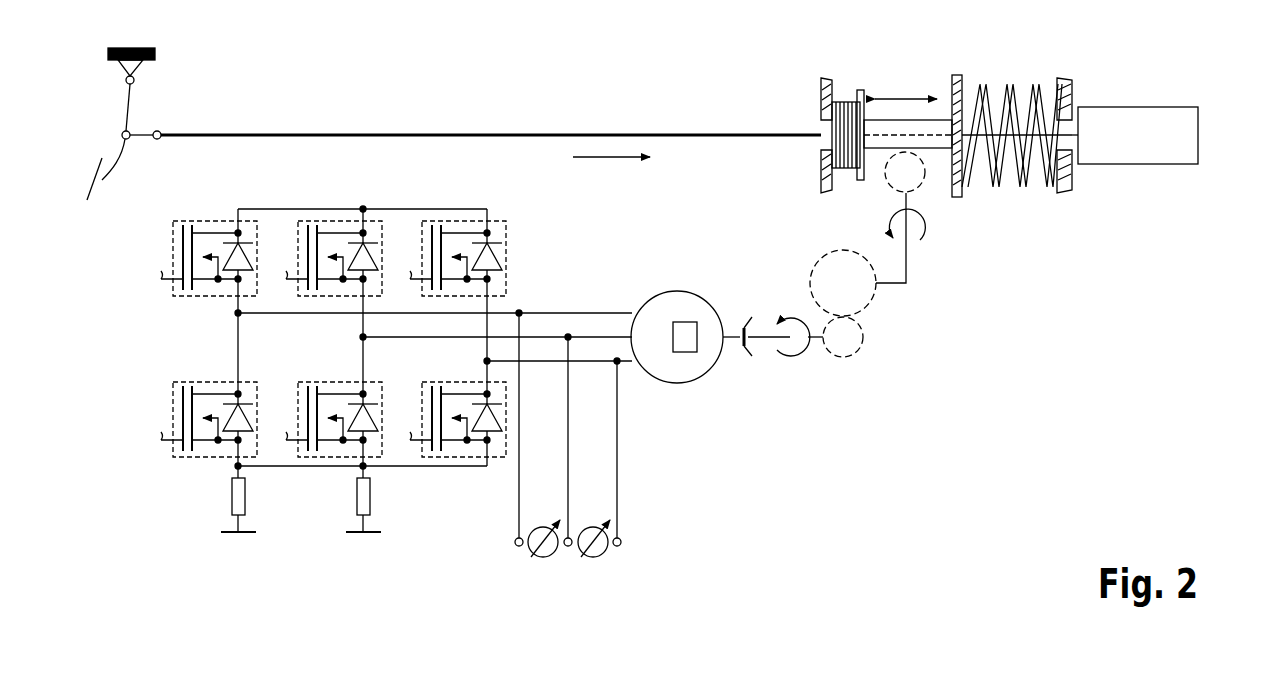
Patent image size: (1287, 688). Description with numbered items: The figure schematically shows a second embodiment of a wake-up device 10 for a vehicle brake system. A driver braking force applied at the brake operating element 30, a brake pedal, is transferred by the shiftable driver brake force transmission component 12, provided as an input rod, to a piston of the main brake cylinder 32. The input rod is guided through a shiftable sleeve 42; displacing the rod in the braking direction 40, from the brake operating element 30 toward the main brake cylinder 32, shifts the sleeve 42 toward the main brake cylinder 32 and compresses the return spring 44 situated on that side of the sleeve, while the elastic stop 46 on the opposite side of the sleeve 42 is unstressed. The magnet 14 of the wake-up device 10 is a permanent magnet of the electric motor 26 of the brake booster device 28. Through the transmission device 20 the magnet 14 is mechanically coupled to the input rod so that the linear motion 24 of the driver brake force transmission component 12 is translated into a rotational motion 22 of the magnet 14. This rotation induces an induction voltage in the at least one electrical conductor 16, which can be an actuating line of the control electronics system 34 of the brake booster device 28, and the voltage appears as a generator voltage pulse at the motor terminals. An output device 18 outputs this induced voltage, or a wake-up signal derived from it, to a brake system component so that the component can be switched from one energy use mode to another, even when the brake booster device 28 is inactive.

The wake-up device 10 is at (660, 437).
The driver brake force transmission component 12 is at (607, 133).
The magnet 14 is at (686, 322).
The electrical conductor 16 is at (604, 358).
The output device 18 is at (534, 556).
The transmission device 20 is at (908, 265).
The rotational motion 22 is at (805, 348).
The linear motion 24 is at (905, 97).
The electric motor 26 is at (704, 333).
The brake booster device 28 is at (374, 373).
The brake operating element 30 is at (128, 105).
The main brake cylinder 32 is at (1198, 136).
The control electronics system 34 is at (306, 503).
The braking direction 40 is at (607, 160).
The sleeve 42 is at (865, 90).
The return spring 44 is at (995, 186).
The elastic stop 46 is at (841, 102).